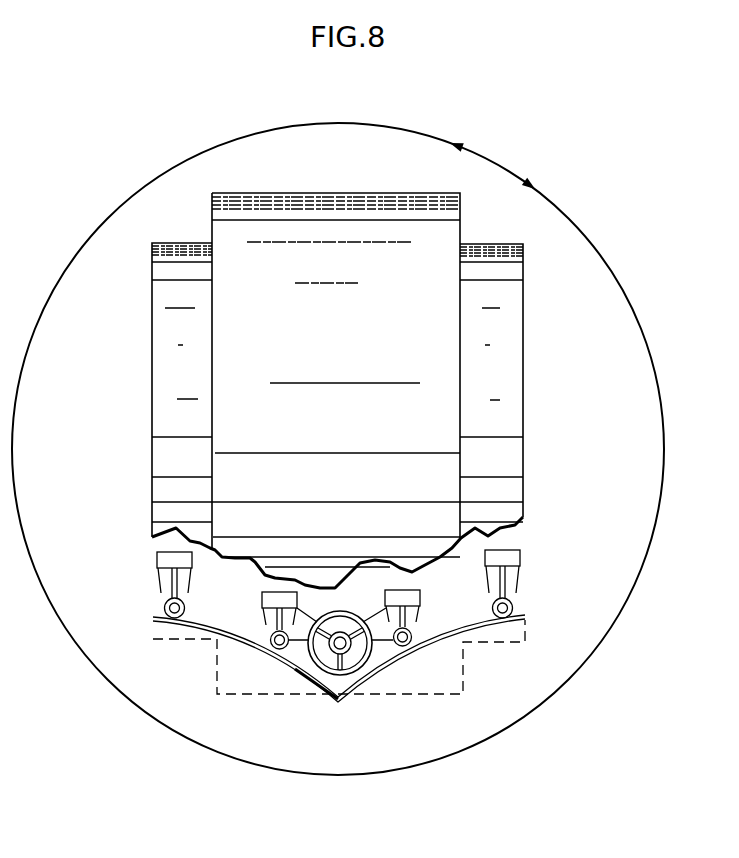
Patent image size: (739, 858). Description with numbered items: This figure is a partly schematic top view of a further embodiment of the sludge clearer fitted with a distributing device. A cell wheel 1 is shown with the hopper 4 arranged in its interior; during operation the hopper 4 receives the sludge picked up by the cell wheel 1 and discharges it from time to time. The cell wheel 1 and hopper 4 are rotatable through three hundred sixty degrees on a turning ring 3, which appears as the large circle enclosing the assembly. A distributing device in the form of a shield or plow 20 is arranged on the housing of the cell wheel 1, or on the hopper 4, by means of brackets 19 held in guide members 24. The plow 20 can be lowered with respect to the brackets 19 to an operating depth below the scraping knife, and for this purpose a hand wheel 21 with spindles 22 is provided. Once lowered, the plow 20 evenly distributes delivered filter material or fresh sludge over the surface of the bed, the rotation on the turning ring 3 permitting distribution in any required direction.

The turning ring 3 is at (468, 148).
The cell wheel 1 is at (440, 208).
The hopper 4 is at (500, 260).
The brackets 19 is at (510, 560).
The guide members 24 is at (513, 612).
The spindles 22 is at (343, 640).
The hand wheel 21 is at (315, 672).
The shield or plow 20 is at (357, 677).